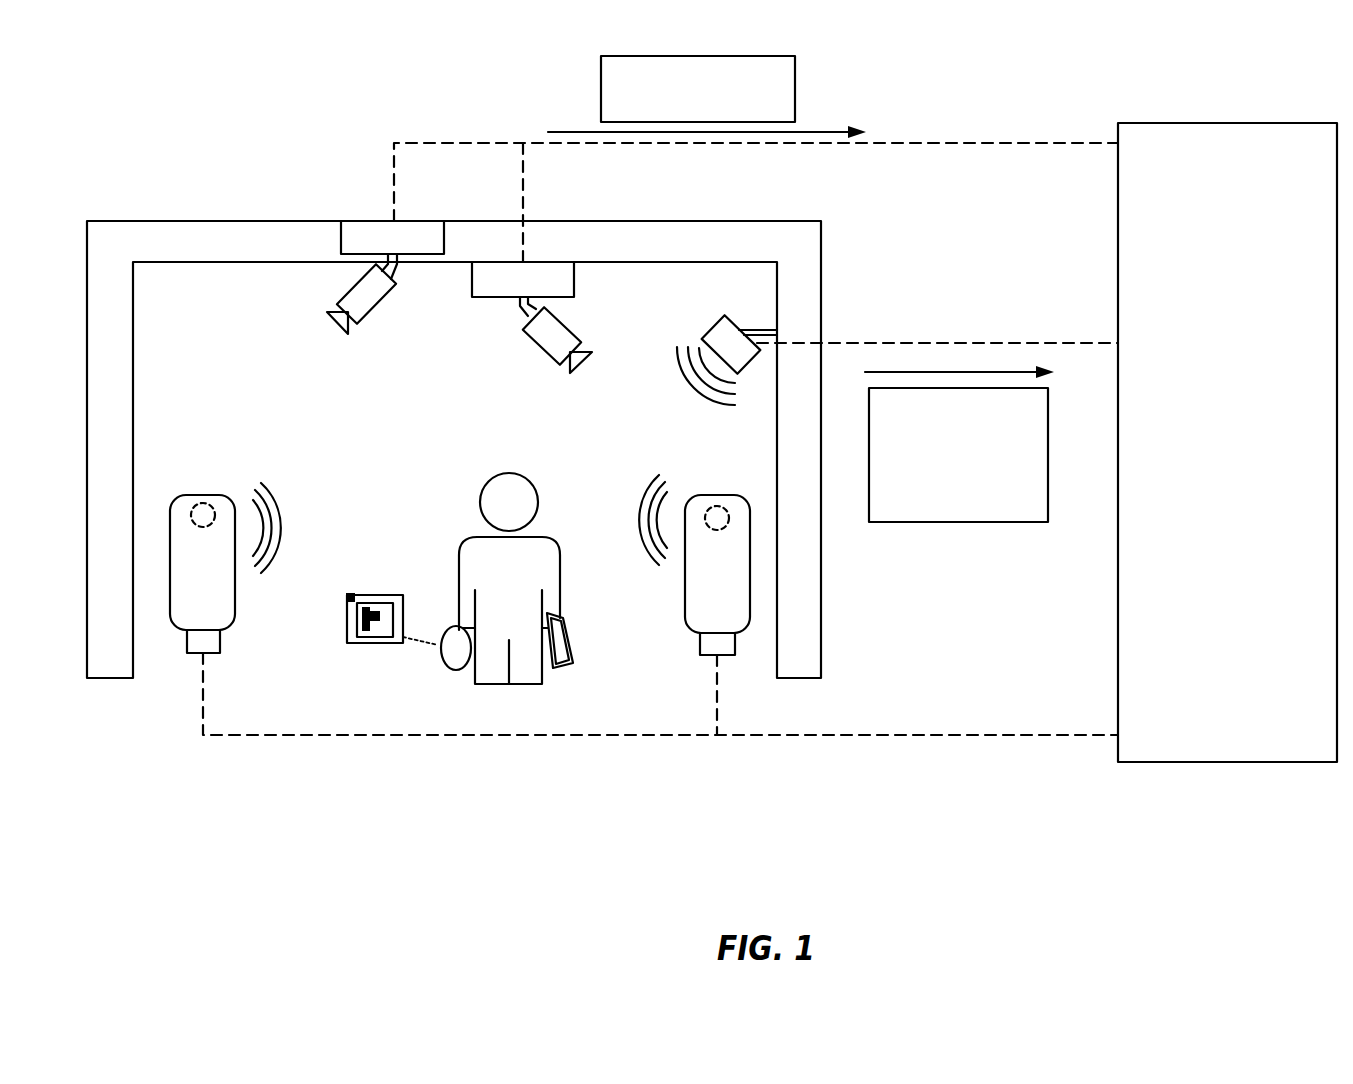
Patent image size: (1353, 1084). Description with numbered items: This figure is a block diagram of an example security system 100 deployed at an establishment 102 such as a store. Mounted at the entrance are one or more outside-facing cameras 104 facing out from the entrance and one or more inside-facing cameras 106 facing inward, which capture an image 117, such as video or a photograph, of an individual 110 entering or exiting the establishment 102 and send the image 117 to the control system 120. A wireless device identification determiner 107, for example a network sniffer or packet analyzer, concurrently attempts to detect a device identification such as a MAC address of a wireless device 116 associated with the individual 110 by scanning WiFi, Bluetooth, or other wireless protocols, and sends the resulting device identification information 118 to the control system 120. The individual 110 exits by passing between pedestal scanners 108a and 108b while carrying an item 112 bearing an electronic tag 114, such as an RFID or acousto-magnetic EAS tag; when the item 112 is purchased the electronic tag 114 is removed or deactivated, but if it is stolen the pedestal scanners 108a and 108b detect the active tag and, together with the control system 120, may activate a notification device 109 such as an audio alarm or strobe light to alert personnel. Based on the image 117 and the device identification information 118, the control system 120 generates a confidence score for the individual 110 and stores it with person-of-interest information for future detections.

The security system 100 is at (150, 91).
The establishment 102 is at (703, 222).
The outside-facing camera 104 is at (347, 298).
The inside-facing camera 106 is at (575, 337).
The wireless device identification determiner 107 is at (728, 318).
The pedestal scanner 108a is at (206, 495).
The pedestal scanner 108b is at (708, 495).
The notification device 109 is at (204, 502).
The individual 110 is at (543, 533).
The item 112 is at (457, 670).
The electronic tag 114 is at (349, 594).
The wireless device 116 is at (573, 622).
The image 117 is at (707, 97).
The device identification information 118 is at (959, 444).
The control system 120 is at (1227, 442).